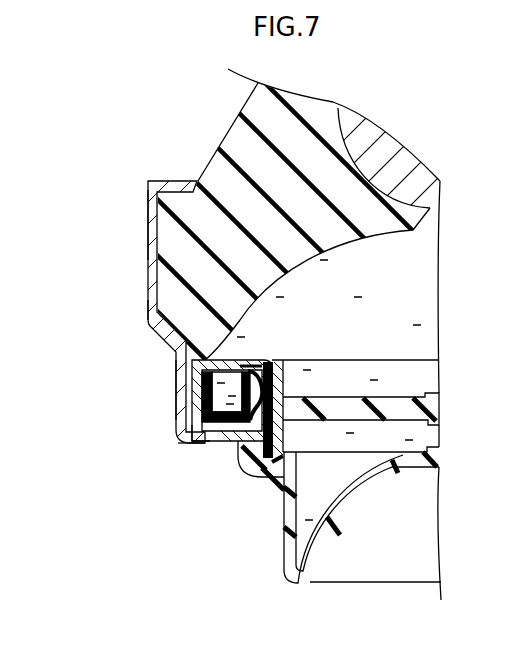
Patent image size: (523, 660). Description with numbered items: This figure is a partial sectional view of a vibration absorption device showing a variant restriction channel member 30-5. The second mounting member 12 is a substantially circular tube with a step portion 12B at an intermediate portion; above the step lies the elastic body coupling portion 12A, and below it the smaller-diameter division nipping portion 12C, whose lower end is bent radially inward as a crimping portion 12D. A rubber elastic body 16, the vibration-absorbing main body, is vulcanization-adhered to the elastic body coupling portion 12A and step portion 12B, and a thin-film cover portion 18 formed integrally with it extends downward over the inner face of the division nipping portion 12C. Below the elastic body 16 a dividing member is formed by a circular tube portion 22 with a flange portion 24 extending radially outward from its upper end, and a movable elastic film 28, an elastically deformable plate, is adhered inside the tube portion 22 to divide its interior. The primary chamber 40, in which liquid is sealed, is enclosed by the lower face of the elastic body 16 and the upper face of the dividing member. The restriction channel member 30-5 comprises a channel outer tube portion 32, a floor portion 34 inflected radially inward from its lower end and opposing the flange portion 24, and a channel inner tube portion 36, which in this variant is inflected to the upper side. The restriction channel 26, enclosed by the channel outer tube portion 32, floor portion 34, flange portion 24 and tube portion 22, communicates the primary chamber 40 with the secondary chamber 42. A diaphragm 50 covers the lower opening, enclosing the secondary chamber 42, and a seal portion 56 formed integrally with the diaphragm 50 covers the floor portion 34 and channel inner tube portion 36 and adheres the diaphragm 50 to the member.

The elastic body 16 is at (238, 128).
The second mounting member 12 is at (147, 280).
The elastic body coupling portion 12A is at (147, 233).
The step portion 12B is at (156, 353).
The division nipping portion 12C is at (186, 385).
The crimping portion 12D is at (188, 446).
The restriction channel member 30-5 is at (192, 362).
The restriction channel 26 is at (224, 399).
The cover portion 18 is at (205, 406).
The channel outer tube portion 32 is at (200, 429).
The floor portion 34 is at (232, 442).
The seal portion 56 is at (247, 470).
The diaphragm 50 is at (285, 560).
The flange portion 24 is at (248, 358).
The tube portion 22 is at (270, 388).
The movable elastic film 28 is at (403, 397).
The primary chamber 40 is at (410, 278).
The channel inner tube portion 36 is at (280, 428).
The secondary chamber 42 is at (329, 488).